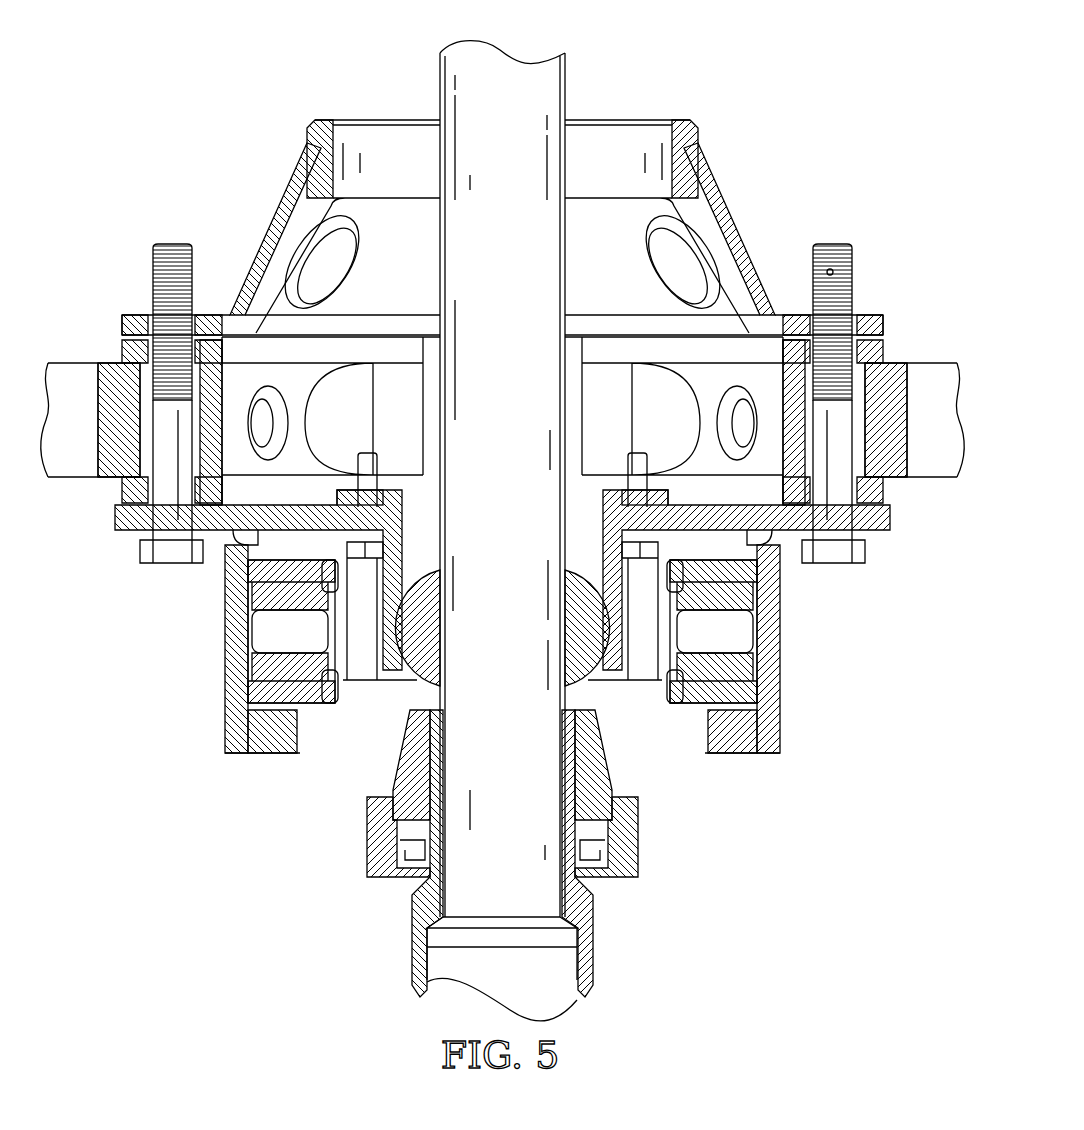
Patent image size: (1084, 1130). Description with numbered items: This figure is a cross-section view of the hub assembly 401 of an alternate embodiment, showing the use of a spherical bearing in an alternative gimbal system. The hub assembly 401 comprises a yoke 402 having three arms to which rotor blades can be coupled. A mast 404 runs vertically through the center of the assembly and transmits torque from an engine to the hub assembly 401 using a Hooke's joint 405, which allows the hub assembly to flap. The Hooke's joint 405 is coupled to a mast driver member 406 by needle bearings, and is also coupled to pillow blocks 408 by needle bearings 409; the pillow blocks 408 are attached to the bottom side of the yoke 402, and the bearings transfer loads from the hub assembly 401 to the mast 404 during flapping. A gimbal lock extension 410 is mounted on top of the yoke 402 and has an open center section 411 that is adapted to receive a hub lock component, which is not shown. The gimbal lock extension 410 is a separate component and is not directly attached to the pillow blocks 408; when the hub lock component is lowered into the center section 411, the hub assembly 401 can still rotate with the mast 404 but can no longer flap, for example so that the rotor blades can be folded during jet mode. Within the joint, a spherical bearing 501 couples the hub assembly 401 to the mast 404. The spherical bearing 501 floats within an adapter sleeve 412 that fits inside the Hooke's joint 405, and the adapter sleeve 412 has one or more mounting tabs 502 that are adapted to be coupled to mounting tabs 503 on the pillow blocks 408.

The hub assembly 401 is at (502, 526).
The yoke 402 is at (78, 362).
The mast 404 is at (410, 936).
The Hooke's joint 405 is at (347, 681).
The mast driver member 406 is at (612, 783).
The pillow blocks 408 is at (287, 745).
The needle bearings 409 is at (228, 694).
The gimbal lock extension 410 is at (726, 201).
The open center section 411 is at (630, 159).
The adapter sleeve 412 is at (612, 519).
The spherical bearing 501 is at (580, 628).
The mounting tabs 502 is at (372, 497).
The mounting tabs 503 is at (370, 522).